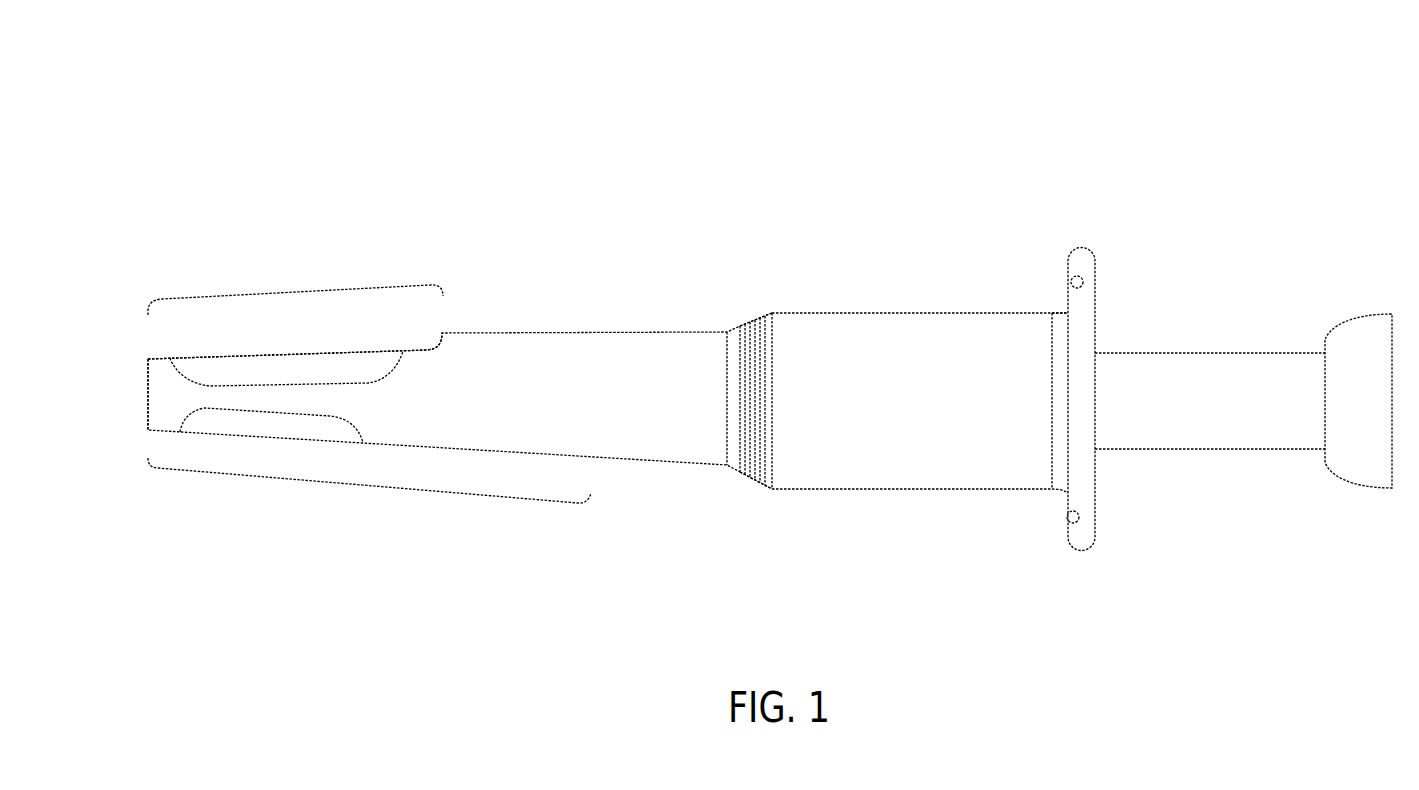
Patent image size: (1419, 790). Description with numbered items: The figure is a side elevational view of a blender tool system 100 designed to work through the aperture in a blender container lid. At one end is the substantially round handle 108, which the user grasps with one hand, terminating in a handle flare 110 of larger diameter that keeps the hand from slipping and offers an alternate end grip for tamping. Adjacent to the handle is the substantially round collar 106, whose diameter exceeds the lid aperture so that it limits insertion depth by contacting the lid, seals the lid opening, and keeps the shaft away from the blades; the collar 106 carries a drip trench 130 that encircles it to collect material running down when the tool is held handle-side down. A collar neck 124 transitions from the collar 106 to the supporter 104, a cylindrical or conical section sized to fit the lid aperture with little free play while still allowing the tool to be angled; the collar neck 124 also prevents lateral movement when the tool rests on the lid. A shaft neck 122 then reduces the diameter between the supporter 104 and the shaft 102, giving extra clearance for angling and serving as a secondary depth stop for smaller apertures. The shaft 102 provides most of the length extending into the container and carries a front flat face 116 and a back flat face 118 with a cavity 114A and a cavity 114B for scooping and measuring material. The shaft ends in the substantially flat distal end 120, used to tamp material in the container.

The blender tool system 100 is at (230, 62).
The shaft 102 is at (460, 401).
The supporter 104 is at (920, 403).
The collar 106 is at (1095, 538).
The handle 108 is at (1210, 401).
The handle flare 110 is at (1358, 401).
The cavity 114A is at (290, 380).
The cavity 114B is at (290, 423).
The front flat face 116 is at (295, 292).
The back flat face 118 is at (353, 486).
The distal end 120 is at (148, 394).
The shaft neck 122 is at (752, 480).
The collar neck 124 is at (1066, 310).
The drip trench 130 is at (1081, 282).